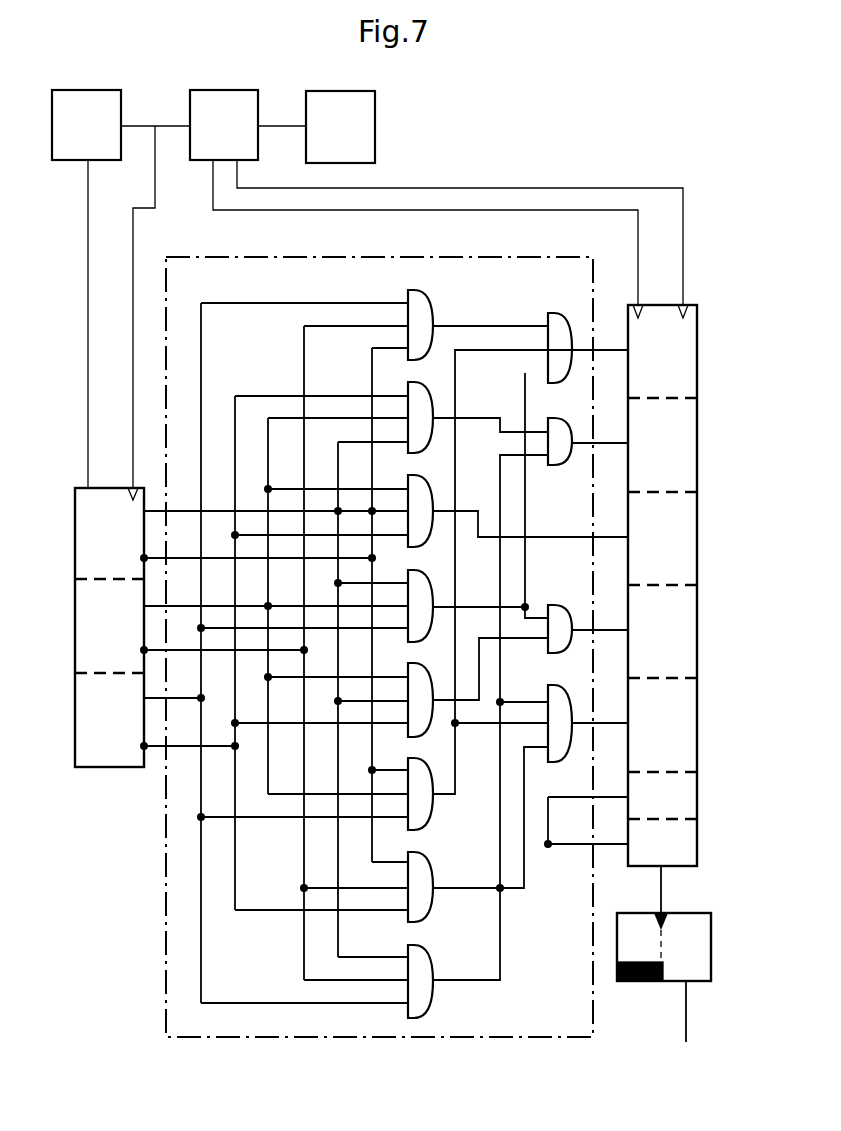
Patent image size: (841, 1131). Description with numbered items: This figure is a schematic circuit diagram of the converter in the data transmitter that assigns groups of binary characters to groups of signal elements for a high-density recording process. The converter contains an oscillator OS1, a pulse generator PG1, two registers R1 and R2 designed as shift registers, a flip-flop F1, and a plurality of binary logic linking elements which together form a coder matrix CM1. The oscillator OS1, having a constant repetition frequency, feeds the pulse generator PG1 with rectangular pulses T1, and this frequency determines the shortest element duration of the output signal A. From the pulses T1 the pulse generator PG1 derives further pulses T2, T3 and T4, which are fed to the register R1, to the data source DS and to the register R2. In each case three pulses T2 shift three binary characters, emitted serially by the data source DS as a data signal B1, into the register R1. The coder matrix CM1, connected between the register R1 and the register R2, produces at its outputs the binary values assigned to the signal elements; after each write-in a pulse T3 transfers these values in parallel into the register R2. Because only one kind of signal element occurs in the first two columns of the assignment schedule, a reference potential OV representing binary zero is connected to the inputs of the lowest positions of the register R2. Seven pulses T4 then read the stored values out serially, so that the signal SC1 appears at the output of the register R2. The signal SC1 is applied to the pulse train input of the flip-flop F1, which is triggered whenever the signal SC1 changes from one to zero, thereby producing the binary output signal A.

The data source DS is at (90, 97).
The pulse generator PG1 is at (228, 98).
The oscillator OS1 is at (367, 106).
The rectangular pulses T1 is at (292, 115).
The pulses T2 is at (170, 115).
The pulse T3 is at (545, 232).
The pulses T4 is at (545, 180).
The data signal B1 is at (70, 256).
The register R1 is at (113, 767).
The register R2 is at (628, 306).
The coder matrix CM1 is at (166, 892).
The reference potential OV is at (548, 844).
The signal SC1 is at (669, 872).
The flip-flop F1 is at (674, 975).
The binary signal A is at (699, 1000).